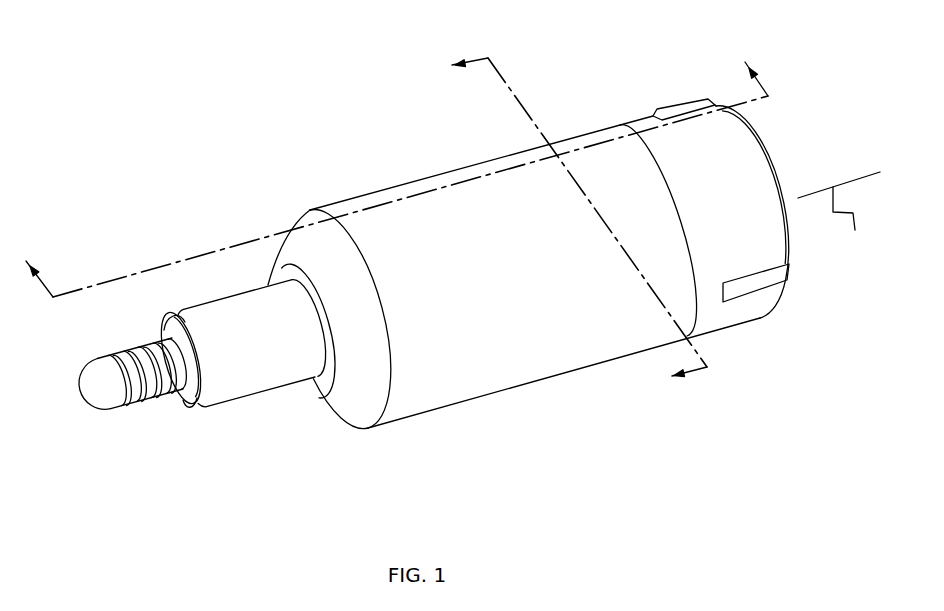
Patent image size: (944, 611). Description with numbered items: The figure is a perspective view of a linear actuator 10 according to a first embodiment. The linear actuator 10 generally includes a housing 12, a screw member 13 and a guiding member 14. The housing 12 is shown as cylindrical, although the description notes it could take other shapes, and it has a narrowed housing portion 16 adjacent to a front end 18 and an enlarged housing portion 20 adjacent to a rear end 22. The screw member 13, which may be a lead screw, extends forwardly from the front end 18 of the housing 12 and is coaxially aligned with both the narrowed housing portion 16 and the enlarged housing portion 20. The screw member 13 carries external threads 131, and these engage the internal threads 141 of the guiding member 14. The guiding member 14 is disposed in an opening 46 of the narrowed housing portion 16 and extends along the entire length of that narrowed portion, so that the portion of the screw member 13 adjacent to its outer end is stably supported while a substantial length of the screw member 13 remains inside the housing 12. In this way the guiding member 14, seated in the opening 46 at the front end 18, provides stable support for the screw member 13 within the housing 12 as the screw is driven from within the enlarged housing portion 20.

The linear actuator 10 is at (162, 122).
The housing 12 is at (371, 183).
The screw member 13 is at (93, 388).
The external threads 131 is at (147, 397).
The guiding member 14 is at (176, 314).
The internal threads 141 is at (188, 397).
The narrowed housing portion 16 is at (270, 393).
The front end 18 is at (236, 446).
The enlarged housing portion 20 is at (473, 397).
The rear end 22 is at (778, 341).
The opening 46 is at (164, 331).